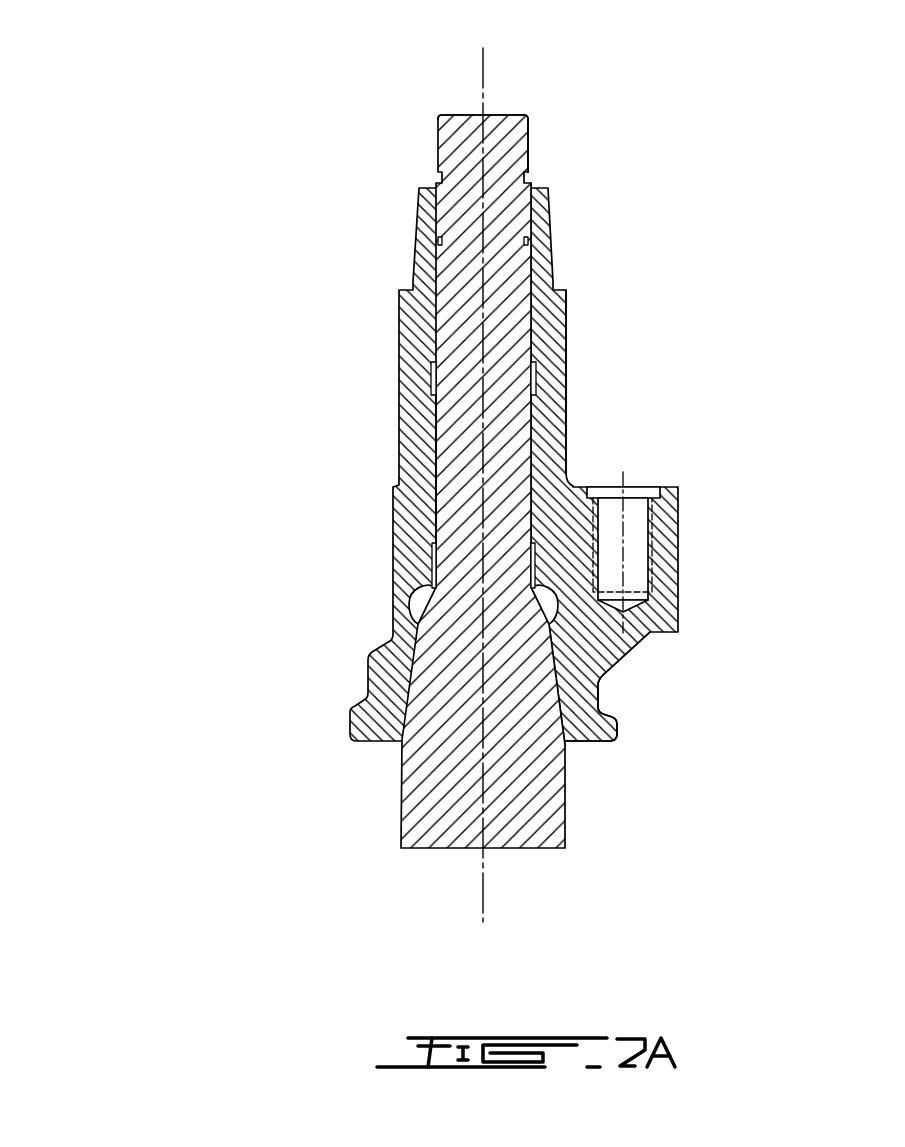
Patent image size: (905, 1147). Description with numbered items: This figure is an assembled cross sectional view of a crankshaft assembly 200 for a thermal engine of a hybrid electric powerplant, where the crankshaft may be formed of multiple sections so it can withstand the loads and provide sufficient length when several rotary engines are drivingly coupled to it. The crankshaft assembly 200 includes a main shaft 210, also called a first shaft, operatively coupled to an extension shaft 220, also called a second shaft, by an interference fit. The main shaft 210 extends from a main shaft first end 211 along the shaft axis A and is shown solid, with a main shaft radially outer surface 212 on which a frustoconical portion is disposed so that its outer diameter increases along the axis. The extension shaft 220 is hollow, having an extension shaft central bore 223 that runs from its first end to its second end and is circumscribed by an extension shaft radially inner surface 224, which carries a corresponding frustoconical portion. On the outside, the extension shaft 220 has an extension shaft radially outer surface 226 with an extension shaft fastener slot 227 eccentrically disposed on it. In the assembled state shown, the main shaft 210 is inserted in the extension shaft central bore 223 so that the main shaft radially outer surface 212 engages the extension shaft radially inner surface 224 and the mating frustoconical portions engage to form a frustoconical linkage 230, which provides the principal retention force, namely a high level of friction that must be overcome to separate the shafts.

The crankshaft assembly 200 is at (435, 469).
The main shaft 210 is at (420, 435).
The main shaft first end 211 is at (440, 157).
The main shaft radially outer surface 212 is at (433, 520).
The extension shaft 220 is at (574, 517).
The extension shaft central bore 223 is at (550, 748).
The extension shaft radially inner surface 224 is at (532, 442).
The extension shaft radially outer surface 226 is at (566, 372).
The extension shaft fastener slot 227 is at (668, 550).
The frustoconical linkage 230 is at (582, 697).